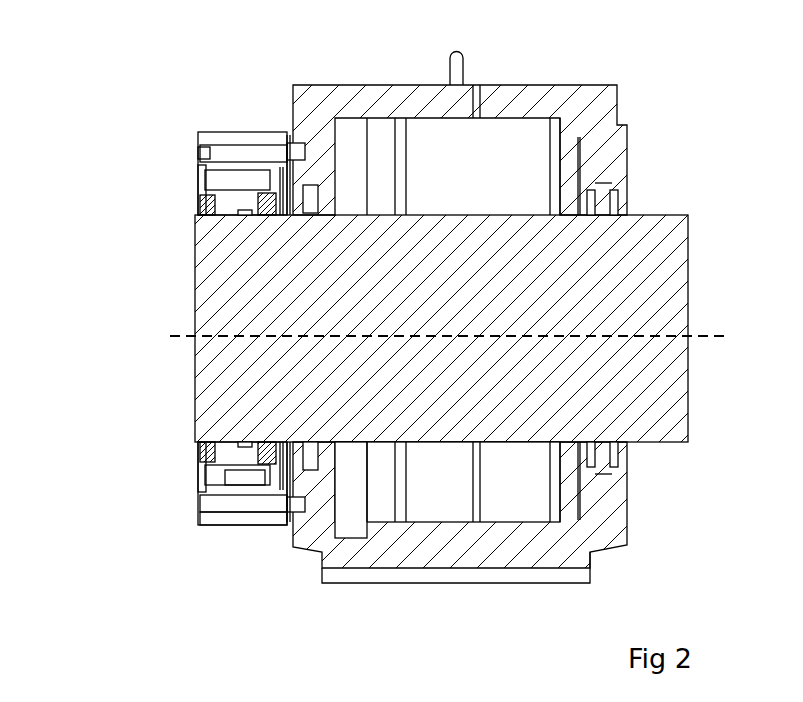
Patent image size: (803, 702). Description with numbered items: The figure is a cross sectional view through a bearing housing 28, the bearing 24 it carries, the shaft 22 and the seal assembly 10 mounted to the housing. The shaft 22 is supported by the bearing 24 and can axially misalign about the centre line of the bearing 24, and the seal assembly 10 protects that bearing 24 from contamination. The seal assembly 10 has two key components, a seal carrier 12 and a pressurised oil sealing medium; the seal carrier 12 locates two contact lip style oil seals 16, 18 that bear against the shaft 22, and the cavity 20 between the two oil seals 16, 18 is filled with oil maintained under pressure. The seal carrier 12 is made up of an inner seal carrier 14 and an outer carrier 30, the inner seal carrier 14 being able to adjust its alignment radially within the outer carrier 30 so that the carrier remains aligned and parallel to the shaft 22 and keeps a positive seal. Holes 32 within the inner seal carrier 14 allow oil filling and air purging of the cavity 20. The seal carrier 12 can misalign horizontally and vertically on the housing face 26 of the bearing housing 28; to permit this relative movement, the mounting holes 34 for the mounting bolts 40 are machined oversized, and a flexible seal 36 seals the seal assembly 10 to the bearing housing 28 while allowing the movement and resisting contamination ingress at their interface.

The seal assembly 10 is at (187, 162).
The seal carrier 12 is at (195, 180).
The inner seal carrier 14 is at (242, 477).
The oil seal 16 is at (265, 200).
The oil seal 18 is at (210, 208).
The cavity 20 is at (245, 212).
The shaft 22 is at (222, 318).
The bearing 24 is at (432, 158).
The housing face 26 is at (318, 102).
The bearing housing 28 is at (285, 130).
The outer carrier 30 is at (202, 148).
The holes 32 is at (205, 187).
The mounting holes 34 is at (235, 515).
The flexible seal 36 is at (285, 478).
The mounting bolts 40 is at (197, 137).